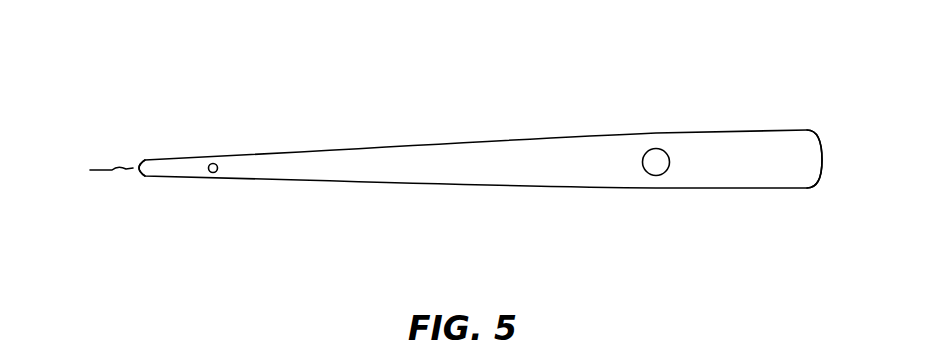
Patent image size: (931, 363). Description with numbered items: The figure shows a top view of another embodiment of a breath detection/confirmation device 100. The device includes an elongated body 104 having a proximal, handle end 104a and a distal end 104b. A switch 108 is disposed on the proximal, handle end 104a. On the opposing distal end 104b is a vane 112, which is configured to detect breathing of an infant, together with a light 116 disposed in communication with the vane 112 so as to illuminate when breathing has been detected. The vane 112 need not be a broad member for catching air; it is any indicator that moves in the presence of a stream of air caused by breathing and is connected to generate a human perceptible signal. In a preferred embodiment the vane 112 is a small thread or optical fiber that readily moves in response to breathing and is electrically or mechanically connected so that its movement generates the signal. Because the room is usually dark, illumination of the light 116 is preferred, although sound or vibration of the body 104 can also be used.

The breath detection/confirmation device 100 is at (417, 113).
The body 104 is at (500, 187).
The proximal, handle end 104a is at (720, 180).
The distal end 104b is at (165, 178).
The switch 108 is at (657, 157).
The vane 112 is at (103, 170).
The light 116 is at (213, 163).